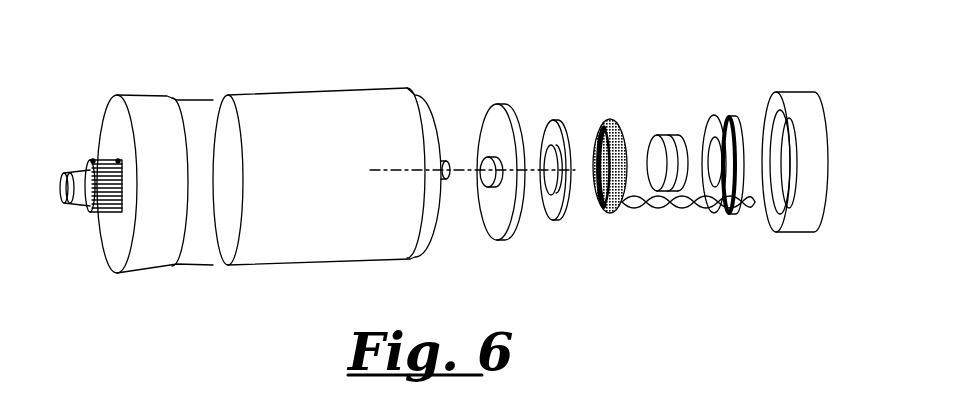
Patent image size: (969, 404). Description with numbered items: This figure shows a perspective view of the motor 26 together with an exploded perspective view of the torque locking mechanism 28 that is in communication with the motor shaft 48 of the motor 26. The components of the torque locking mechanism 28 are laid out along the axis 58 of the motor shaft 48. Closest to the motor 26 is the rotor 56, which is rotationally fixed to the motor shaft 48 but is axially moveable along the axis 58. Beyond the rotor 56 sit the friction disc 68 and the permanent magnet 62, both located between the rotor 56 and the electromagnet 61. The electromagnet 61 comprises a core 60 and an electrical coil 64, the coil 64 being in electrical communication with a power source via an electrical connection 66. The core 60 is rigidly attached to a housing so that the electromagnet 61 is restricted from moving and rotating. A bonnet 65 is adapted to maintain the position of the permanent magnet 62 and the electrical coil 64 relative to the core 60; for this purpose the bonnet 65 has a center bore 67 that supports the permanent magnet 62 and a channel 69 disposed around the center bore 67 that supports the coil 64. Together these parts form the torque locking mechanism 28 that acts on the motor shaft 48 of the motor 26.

The motor 26 is at (229, 80).
The torque locking mechanism 28 is at (691, 94).
The motor shaft 48 is at (448, 180).
The rotor 56 is at (497, 212).
The axis 58 is at (402, 168).
The core 60 is at (798, 213).
The electromagnet 61 is at (723, 257).
The permanent magnet 62 is at (658, 160).
The electrical coil 64 is at (620, 205).
The bonnet 65 is at (722, 205).
The electrical connection 66 is at (655, 204).
The center bore 67 is at (713, 158).
The friction disc 68 is at (555, 206).
The channel 69 is at (727, 120).